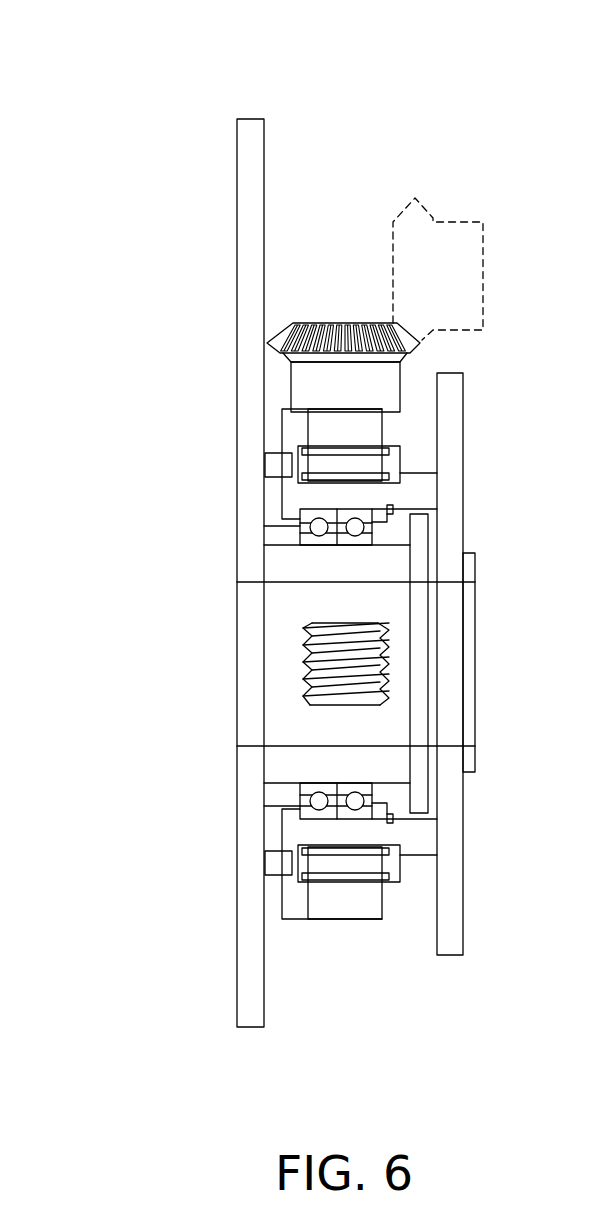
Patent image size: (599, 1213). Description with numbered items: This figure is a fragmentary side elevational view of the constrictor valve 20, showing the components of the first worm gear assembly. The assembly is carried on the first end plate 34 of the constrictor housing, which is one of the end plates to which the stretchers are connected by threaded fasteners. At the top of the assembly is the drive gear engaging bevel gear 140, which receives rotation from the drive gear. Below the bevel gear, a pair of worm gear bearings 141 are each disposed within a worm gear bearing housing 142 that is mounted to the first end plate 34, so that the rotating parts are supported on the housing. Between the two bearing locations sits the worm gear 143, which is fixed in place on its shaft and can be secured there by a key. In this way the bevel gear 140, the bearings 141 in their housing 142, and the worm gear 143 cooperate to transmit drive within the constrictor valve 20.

The drive assembly 20 is at (106, 101).
The first end plate 34 is at (250, 170).
The drive gear engaging bevel gear 140 is at (291, 383).
The worm gear bearings 141 is at (320, 470).
The worm gear bearing housing 142 is at (275, 447).
The worm gear 143 is at (305, 662).